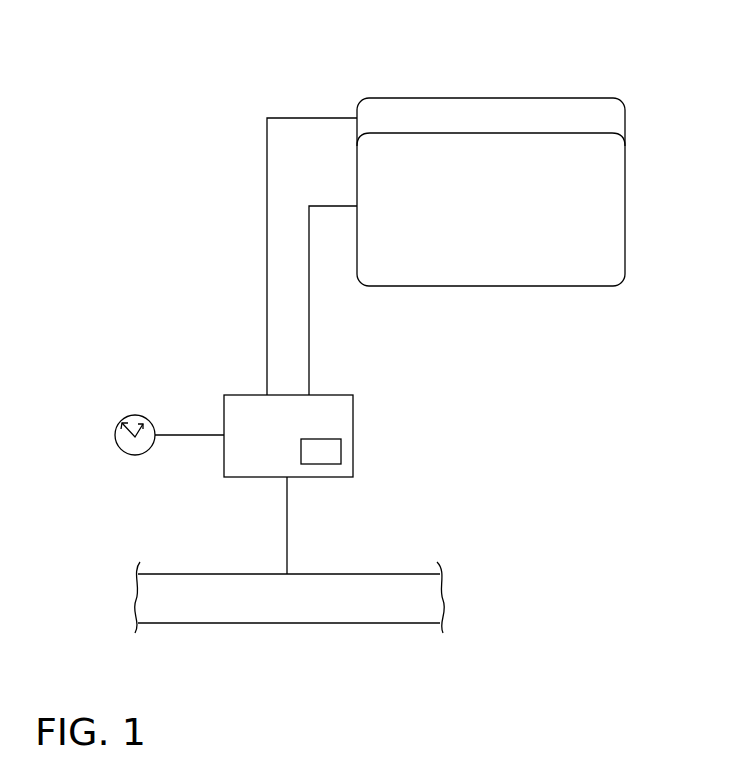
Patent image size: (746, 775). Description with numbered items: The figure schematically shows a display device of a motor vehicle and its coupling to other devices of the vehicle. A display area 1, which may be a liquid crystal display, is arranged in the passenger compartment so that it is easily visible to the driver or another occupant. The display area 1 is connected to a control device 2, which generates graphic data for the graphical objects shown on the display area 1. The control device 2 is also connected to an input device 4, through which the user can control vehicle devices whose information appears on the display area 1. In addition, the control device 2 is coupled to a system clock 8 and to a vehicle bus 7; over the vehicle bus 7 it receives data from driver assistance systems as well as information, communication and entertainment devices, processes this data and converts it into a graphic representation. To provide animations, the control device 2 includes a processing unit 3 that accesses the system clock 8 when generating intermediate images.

The display area 1 is at (614, 187).
The control device 2 is at (343, 412).
The processing unit 3 is at (330, 451).
The input device 4 is at (528, 107).
The vehicle bus 7 is at (344, 613).
The system clock 8 is at (126, 443).